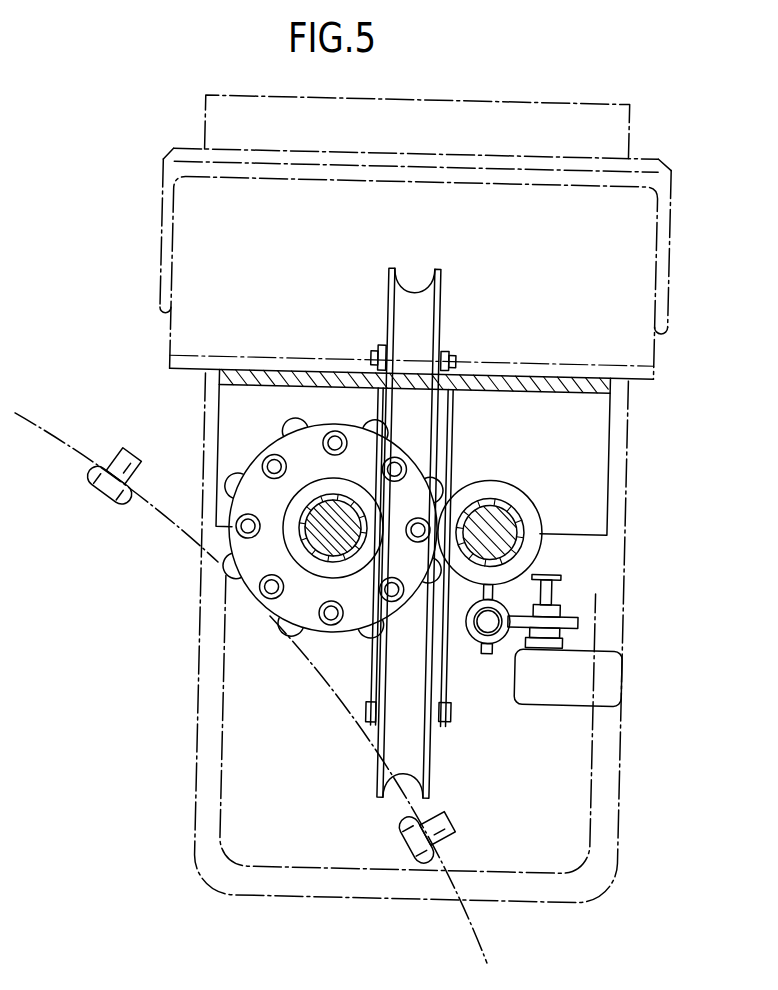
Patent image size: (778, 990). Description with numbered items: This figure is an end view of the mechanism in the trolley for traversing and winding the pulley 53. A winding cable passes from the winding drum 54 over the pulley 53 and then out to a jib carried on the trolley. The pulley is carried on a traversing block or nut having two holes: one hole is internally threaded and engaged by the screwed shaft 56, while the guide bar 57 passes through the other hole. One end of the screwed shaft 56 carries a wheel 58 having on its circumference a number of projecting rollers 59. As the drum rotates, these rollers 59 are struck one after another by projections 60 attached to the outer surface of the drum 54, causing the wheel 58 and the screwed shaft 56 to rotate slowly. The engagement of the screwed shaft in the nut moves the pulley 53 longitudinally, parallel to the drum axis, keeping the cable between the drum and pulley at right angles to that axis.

The pulley 53 is at (418, 311).
The winding drum 54 is at (58, 444).
The screwed shaft 56 is at (341, 548).
The guide bar 57 is at (501, 511).
The wheel 58 is at (283, 449).
The projecting rollers 59 is at (431, 480).
The projections 60 is at (131, 456).